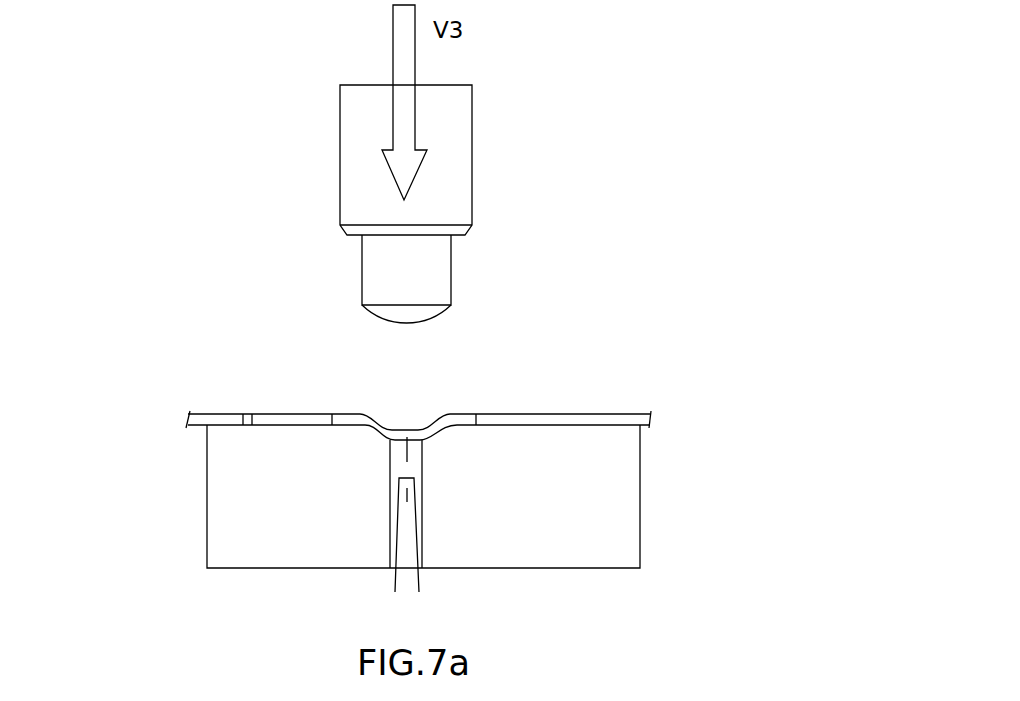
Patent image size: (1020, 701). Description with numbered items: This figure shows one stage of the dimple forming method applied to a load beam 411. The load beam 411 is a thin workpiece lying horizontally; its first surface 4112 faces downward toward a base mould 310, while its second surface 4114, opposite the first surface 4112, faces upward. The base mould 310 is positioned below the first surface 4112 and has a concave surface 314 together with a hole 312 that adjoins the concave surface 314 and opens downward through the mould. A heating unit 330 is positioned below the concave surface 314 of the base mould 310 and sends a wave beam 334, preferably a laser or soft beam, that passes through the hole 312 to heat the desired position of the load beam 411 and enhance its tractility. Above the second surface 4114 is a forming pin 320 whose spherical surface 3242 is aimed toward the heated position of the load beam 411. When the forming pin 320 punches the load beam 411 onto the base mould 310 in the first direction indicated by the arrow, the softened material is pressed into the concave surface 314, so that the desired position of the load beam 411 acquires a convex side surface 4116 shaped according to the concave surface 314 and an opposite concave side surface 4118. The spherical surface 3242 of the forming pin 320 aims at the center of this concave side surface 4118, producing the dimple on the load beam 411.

The forming pin 320 is at (360, 133).
The spherical surface 3242 is at (405, 323).
The base mould 310 is at (245, 497).
The hole 312 is at (417, 467).
The concave surface 314 is at (410, 440).
The heating unit 330 is at (408, 533).
The wave beam 334 is at (407, 450).
The load beam 411 is at (230, 417).
The second surface 4114 is at (322, 413).
The concave side surface 4118 is at (362, 406).
The convex side surface 4116 is at (448, 420).
The first surface 4112 is at (572, 422).